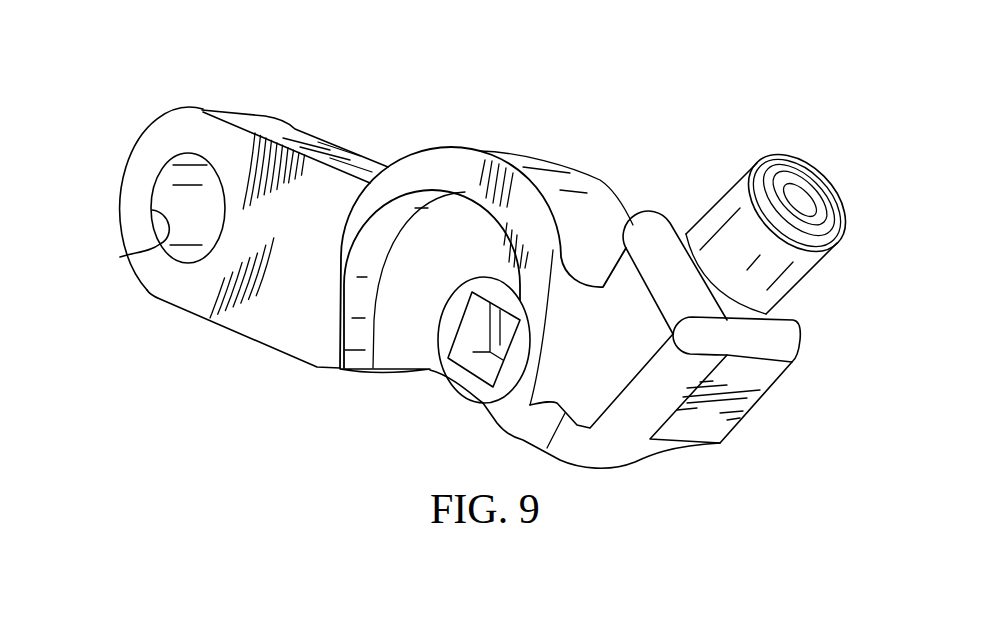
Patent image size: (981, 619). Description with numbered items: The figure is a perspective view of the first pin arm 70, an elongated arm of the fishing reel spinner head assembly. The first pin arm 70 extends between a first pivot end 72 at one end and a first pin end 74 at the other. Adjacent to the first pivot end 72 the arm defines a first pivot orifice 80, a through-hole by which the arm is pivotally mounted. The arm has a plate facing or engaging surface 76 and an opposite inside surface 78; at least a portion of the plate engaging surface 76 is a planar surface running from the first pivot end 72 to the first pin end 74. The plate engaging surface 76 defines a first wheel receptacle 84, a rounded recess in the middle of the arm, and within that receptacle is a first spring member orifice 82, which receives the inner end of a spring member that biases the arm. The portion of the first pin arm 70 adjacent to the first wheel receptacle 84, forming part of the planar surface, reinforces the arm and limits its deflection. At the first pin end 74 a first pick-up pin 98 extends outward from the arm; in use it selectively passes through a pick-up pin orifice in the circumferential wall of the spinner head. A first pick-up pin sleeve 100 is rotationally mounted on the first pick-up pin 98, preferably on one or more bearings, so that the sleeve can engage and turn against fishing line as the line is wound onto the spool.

The first pin arm 70 is at (203, 73).
The first pivot end 72 is at (108, 169).
The first pin end 74 is at (818, 316).
The plate engaging surface 76 is at (272, 344).
The inside surface 78 is at (320, 140).
The first pivot orifice 80 is at (140, 249).
The first spring member orifice 82 is at (482, 370).
The first wheel receptacle 84 is at (385, 300).
The first pick-up pin 98 is at (800, 200).
The first pick-up pin sleeve 100 is at (713, 206).